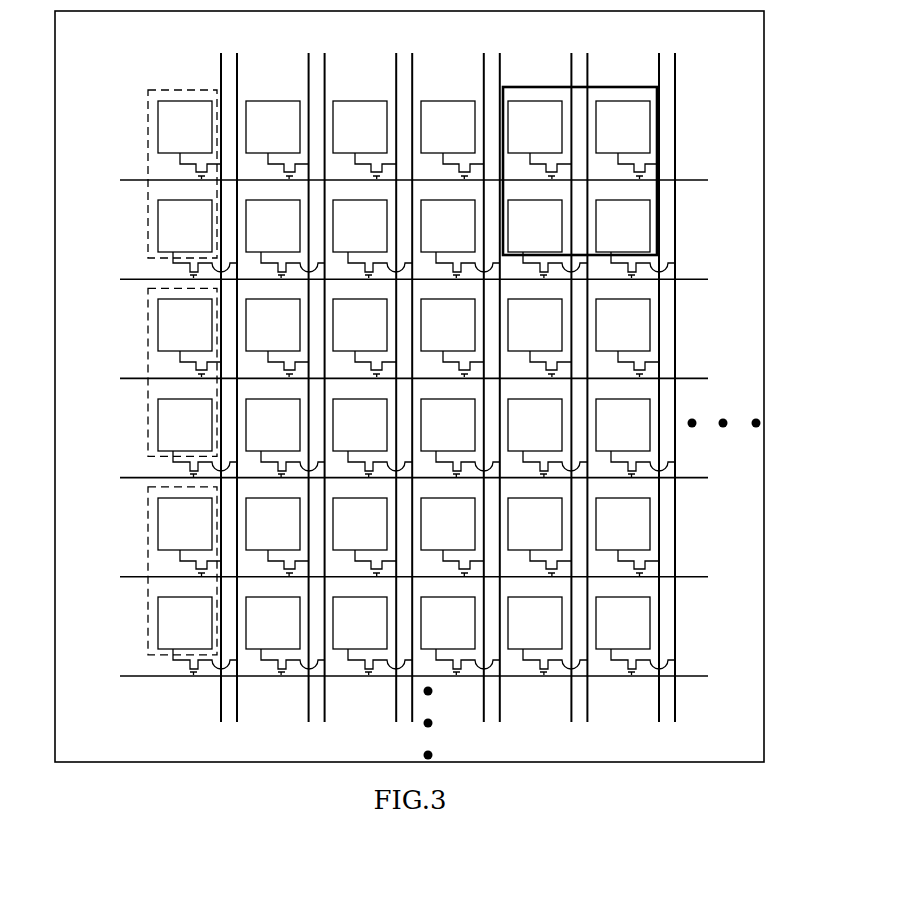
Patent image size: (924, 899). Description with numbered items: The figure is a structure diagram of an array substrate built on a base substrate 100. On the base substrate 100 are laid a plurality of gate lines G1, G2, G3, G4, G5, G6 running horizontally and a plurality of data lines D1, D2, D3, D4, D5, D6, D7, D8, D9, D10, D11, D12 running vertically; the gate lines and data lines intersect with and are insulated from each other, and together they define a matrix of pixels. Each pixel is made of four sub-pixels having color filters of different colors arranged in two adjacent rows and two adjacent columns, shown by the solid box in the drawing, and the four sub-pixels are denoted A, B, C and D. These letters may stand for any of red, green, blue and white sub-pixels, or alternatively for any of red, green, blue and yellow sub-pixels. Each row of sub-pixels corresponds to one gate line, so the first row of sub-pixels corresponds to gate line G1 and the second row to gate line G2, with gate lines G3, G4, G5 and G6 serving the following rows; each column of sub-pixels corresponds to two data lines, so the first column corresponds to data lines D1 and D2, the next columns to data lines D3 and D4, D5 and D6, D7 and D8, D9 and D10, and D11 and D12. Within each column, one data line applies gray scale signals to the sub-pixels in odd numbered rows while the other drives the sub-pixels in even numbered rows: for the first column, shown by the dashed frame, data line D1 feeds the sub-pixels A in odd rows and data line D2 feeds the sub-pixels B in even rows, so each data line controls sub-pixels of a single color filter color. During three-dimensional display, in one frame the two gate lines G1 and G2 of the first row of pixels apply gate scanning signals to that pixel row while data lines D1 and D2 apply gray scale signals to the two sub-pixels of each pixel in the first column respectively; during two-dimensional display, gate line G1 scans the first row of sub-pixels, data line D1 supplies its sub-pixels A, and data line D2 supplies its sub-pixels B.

The base substrate 100 is at (710, 105).
The data line D1 is at (216, 371).
The data line D2 is at (244, 371).
The data line D3 is at (307, 371).
The data line D4 is at (334, 371).
The data line D5 is at (388, 371).
The data line D6 is at (416, 371).
The data line D7 is at (479, 371).
The data line D8 is at (505, 371).
The data line D9 is at (565, 371).
The data line D10 is at (596, 371).
The data line D11 is at (648, 371).
The data line D12 is at (683, 371).
The gate line G1 is at (401, 180).
The gate line G2 is at (401, 279).
The gate line G3 is at (401, 378).
The gate line G4 is at (401, 478).
The gate line G5 is at (401, 577).
The gate line G6 is at (401, 676).
The sub-pixel A is at (364, 338).
The sub-pixel B is at (372, 437).
The sub-pixel C is at (452, 338).
The sub-pixel D is at (460, 437).